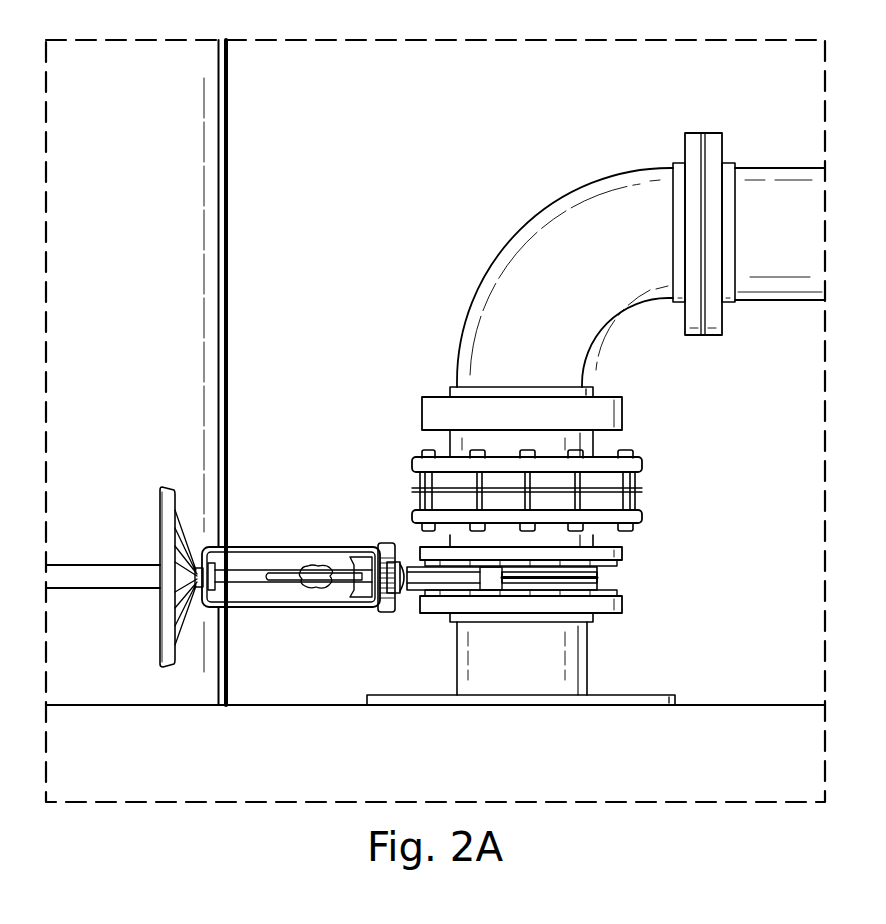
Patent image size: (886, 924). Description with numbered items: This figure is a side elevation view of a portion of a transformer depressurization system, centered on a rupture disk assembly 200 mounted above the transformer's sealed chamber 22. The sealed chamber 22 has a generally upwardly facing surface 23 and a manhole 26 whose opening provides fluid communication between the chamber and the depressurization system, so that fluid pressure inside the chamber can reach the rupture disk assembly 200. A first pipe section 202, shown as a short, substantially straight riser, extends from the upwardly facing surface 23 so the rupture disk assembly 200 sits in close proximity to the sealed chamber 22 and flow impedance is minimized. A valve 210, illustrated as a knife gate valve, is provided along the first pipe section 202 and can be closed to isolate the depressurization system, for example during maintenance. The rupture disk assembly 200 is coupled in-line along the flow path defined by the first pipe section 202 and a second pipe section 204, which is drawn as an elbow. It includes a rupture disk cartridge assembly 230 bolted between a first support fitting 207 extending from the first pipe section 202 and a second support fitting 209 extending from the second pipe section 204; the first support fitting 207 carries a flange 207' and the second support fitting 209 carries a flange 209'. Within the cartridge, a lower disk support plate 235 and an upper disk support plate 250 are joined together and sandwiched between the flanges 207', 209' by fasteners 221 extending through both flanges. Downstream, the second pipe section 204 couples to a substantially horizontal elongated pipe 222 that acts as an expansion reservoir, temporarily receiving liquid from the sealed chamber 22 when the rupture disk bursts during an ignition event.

The sealed chamber 22 is at (451, 772).
The upwardly facing surface 23 is at (748, 703).
The manhole 26 is at (412, 702).
The rupture disk assembly 200 is at (333, 477).
The first pipe section 202 is at (578, 660).
The second pipe section 204 is at (595, 183).
The first support fitting 207 is at (566, 554).
The flange 207' is at (487, 504).
The second support fitting 209 is at (564, 427).
The flange 209' is at (567, 454).
The valve 210 is at (305, 619).
The fasteners 221 is at (433, 452).
The elongated pipe 222 is at (765, 167).
The rupture disk cartridge assembly 230 is at (414, 481).
The lower disk support plate 235 is at (638, 503).
The upper disk support plate 250 is at (638, 482).